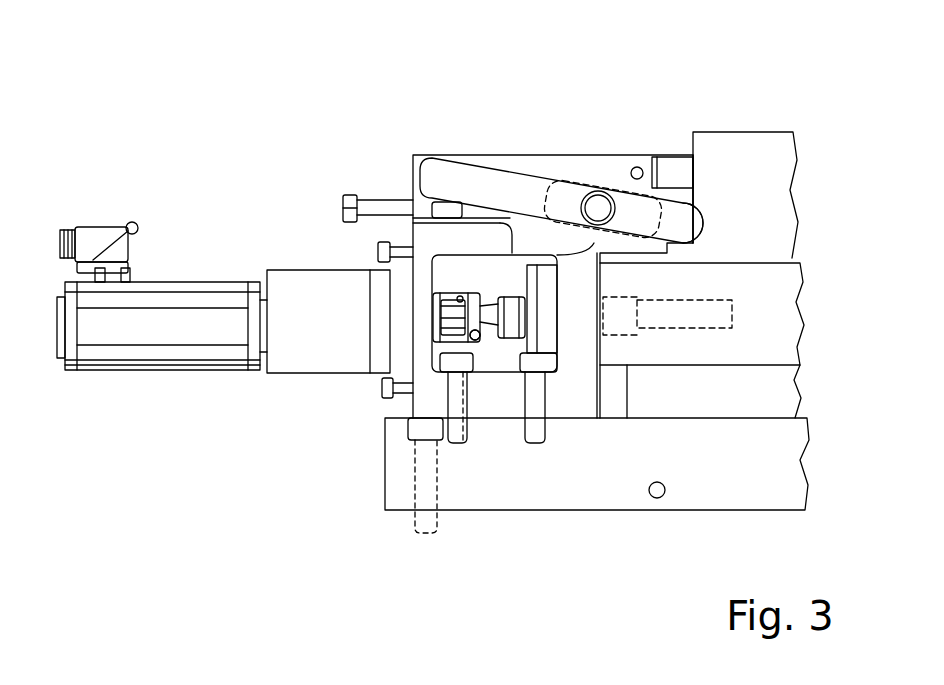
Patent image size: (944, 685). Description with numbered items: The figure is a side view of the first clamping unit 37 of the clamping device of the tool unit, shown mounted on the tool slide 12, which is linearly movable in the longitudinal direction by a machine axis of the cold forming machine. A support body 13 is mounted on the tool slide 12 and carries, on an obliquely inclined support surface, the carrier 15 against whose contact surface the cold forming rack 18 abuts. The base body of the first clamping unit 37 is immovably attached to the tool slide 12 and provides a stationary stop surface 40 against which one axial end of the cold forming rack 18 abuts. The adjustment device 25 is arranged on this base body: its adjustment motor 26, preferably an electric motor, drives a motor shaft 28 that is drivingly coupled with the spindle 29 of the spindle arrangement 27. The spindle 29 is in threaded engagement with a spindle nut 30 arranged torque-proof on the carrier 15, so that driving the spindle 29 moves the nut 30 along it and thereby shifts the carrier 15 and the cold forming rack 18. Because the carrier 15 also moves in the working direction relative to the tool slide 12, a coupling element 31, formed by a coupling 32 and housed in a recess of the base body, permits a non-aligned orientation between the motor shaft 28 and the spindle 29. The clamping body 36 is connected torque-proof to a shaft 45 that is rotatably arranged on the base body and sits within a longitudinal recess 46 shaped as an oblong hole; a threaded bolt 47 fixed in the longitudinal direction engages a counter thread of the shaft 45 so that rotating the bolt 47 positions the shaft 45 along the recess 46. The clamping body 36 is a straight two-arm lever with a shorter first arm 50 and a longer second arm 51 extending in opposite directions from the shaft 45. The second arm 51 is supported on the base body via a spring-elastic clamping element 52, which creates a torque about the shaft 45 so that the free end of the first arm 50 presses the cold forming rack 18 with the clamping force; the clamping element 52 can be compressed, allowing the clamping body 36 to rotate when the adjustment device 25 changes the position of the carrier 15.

The tool slide 12 is at (727, 487).
The support body 13 is at (782, 393).
The carrier 15 is at (782, 312).
The cold forming rack 18 is at (753, 152).
The adjustment device 25 is at (281, 396).
The adjustment motor 26 is at (238, 280).
The spindle arrangement 27 is at (695, 278).
The motor shaft 28 is at (433, 323).
The spindle 29 is at (698, 318).
The spindle nut 30 is at (627, 327).
The coupling element 31 is at (477, 340).
The coupling 32 is at (477, 340).
The clamping body 36 is at (522, 172).
The first clamping unit 37 is at (268, 105).
The stationary stop surface 40 is at (697, 163).
The shaft 45 is at (598, 190).
The longitudinal recess 46 is at (564, 202).
The threaded bolt 47 is at (378, 200).
The first arm 50 is at (677, 212).
The second arm 51 is at (471, 168).
The clamping element 52 is at (455, 222).